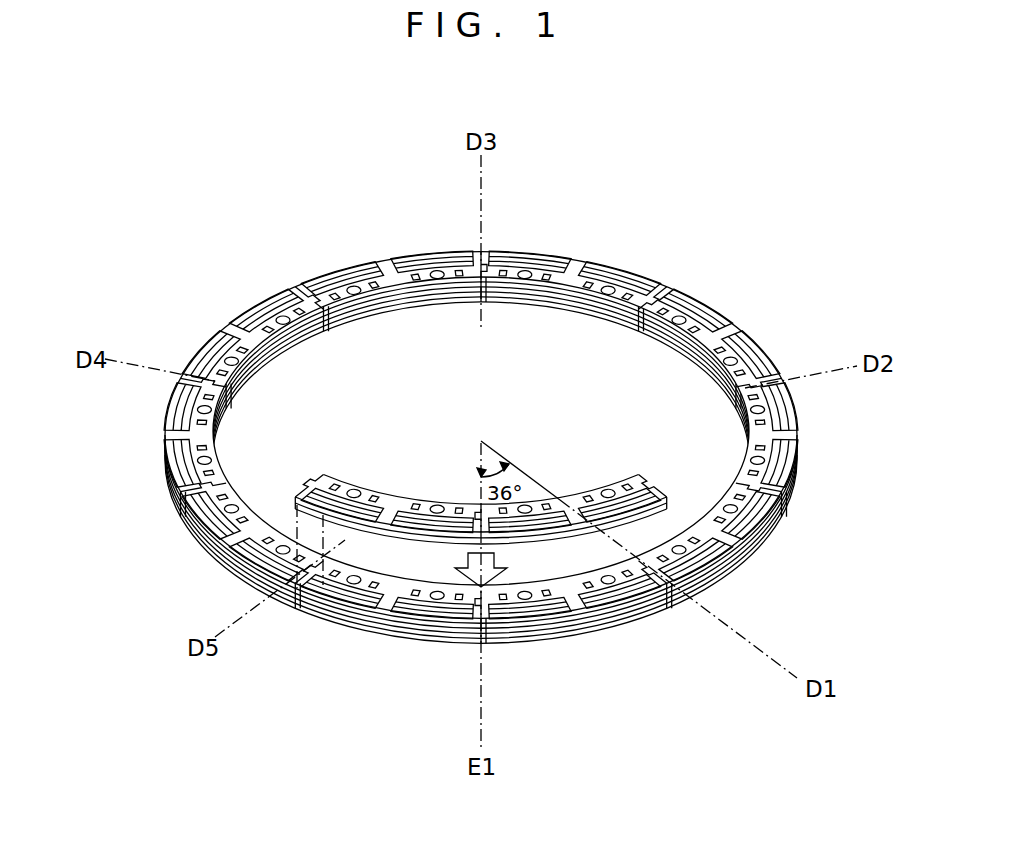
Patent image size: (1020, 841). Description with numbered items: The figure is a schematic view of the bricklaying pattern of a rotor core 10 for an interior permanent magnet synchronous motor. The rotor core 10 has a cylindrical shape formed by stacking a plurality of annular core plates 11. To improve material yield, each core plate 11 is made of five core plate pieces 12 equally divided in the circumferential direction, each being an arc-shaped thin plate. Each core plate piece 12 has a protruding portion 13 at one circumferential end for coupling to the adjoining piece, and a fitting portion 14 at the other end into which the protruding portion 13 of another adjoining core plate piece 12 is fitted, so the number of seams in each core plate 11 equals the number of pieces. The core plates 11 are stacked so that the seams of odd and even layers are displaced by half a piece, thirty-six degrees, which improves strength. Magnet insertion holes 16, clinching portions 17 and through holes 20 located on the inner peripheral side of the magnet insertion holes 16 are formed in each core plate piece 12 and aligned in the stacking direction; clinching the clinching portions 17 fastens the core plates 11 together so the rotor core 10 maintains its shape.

The rotor core 10 is at (475, 375).
The core plate 11 is at (568, 263).
The core plate piece 12 is at (303, 292).
The protruding portion 13 is at (481, 513).
The fitting portion 14 is at (478, 502).
The magnet insertion hole 16 is at (398, 266).
The clinching portion 17 is at (218, 371).
The through hole 20 is at (236, 364).